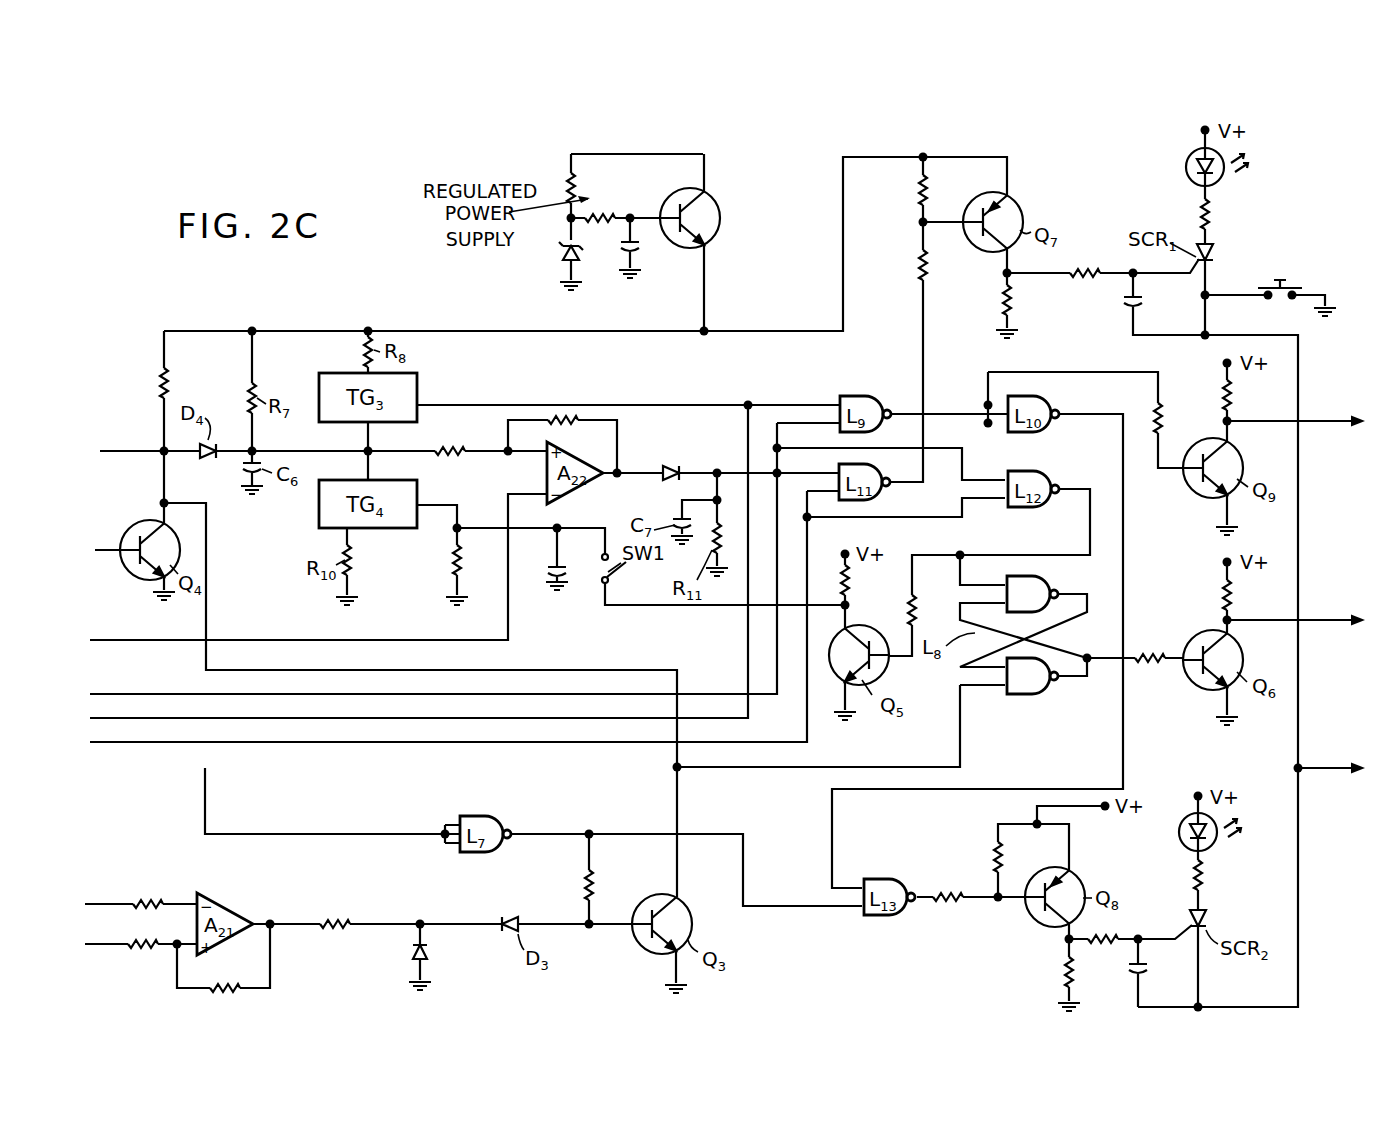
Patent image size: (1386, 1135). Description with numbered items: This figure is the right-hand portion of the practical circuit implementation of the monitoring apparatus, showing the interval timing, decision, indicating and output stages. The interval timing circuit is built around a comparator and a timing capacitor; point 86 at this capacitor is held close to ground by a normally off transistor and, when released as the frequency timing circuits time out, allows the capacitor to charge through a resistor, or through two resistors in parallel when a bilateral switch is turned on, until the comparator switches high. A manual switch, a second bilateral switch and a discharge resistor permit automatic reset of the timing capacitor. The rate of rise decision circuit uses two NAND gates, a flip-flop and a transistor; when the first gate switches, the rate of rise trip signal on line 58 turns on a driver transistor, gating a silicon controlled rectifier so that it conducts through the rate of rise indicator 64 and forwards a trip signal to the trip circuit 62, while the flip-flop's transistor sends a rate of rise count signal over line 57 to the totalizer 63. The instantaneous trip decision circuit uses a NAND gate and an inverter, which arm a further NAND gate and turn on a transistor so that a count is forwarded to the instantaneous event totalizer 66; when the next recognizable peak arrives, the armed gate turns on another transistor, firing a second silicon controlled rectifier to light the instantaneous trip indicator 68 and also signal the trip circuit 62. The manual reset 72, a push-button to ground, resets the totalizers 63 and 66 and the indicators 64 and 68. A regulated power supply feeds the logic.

The point 86 is at (162, 452).
The line 58 is at (920, 348).
The rate of rise indicator 64 is at (1186, 173).
The manual reset 72 is at (1291, 290).
The line 57 is at (1276, 618).
The instantaneous event totalizer 66 is at (1339, 430).
The totalizer 63 is at (1339, 626).
The trip circuit 62 is at (1339, 776).
The instantaneous trip indicator 68 is at (1216, 841).